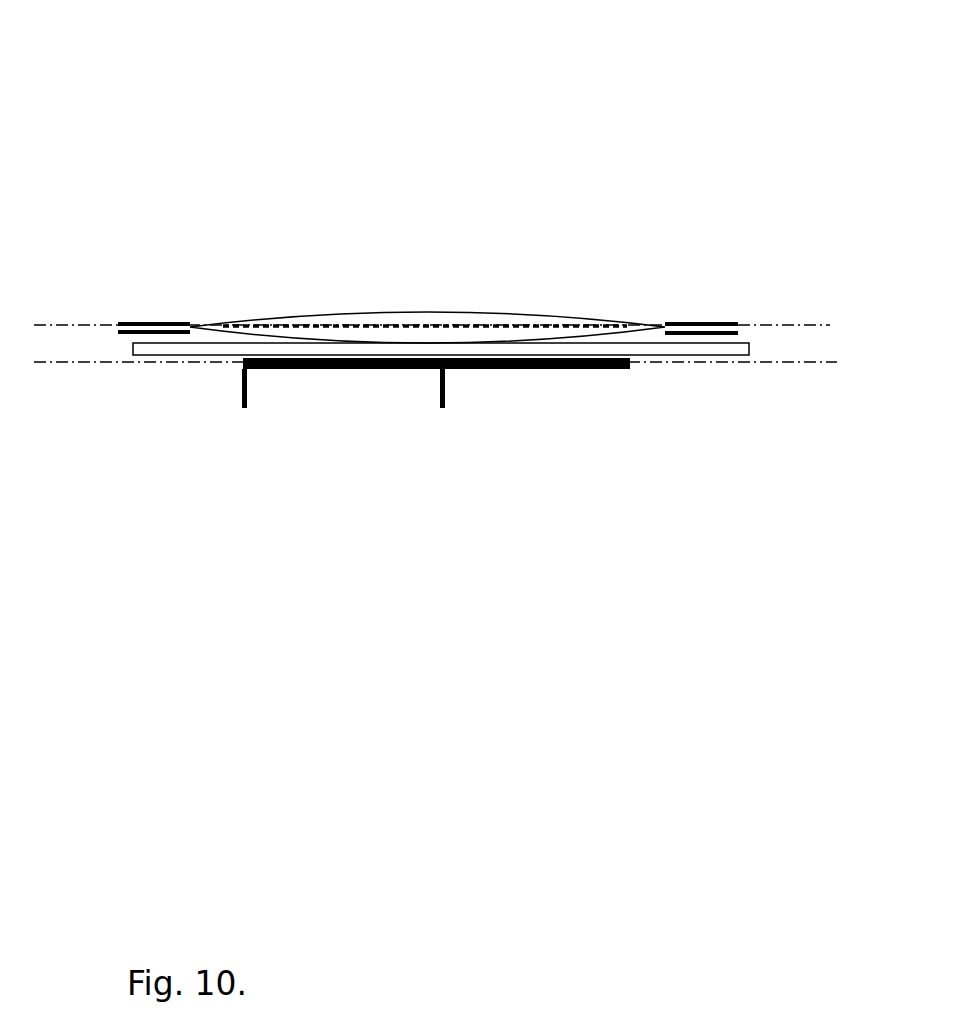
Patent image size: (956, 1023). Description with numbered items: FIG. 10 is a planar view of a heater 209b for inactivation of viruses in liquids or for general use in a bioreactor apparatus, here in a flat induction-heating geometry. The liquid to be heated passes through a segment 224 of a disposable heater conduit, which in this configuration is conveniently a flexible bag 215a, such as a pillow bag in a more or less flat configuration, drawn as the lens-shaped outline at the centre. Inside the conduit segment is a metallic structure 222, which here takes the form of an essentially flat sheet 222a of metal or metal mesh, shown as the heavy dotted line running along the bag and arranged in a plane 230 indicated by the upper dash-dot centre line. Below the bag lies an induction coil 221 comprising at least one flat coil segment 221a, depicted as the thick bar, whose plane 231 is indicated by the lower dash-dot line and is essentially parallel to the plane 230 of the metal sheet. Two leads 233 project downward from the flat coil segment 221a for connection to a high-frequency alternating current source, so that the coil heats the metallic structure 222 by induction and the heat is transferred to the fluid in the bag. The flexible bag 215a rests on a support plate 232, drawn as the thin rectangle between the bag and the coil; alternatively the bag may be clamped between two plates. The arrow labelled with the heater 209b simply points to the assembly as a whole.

The heater 209b is at (437, 108).
The plane 230 is at (760, 327).
The plane 231 is at (787, 363).
The metallic structure 222 is at (368, 325).
The flat sheet of metal or metal mesh 222a is at (290, 326).
The segment of disposable heater conduit 224 is at (462, 315).
The flexible bag 215a is at (550, 315).
The support plate 232 is at (172, 349).
The induction coil 221 is at (370, 369).
The flat coil segment 221a is at (530, 369).
The leads 233 is at (242, 395).